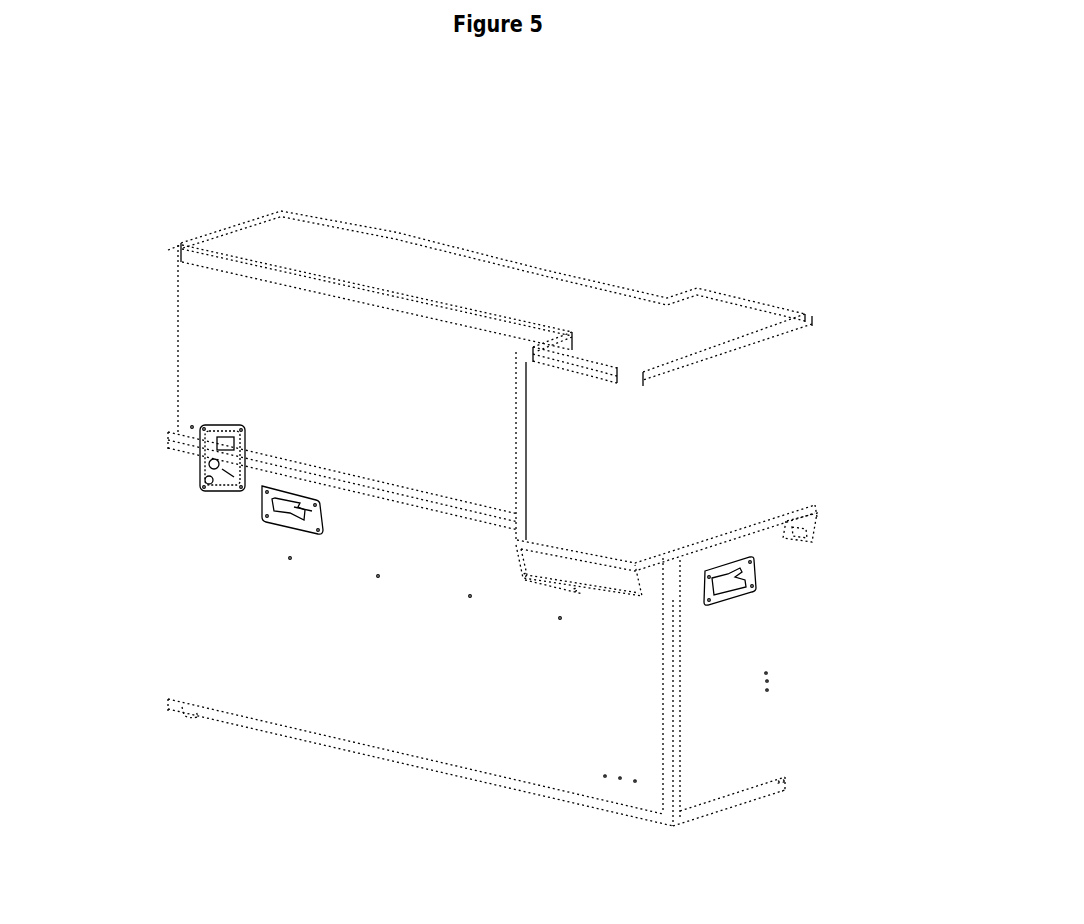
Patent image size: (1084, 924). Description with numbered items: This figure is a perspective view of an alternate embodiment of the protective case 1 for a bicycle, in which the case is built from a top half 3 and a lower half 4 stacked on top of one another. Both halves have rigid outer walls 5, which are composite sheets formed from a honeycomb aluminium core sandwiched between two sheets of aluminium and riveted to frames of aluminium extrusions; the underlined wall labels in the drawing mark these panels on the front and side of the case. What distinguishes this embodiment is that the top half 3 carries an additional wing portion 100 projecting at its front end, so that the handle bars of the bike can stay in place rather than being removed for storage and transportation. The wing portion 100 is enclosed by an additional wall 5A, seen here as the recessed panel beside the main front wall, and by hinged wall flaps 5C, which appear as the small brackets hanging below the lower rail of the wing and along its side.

The protective case 1 is at (842, 388).
The wing portion 100 is at (760, 293).
The top half 3 is at (163, 345).
The lower half 4 is at (162, 571).
The rigid outer walls 5 is at (365, 402).
The additional wall 5A is at (587, 453).
The hinged wall flaps 5C is at (800, 520).